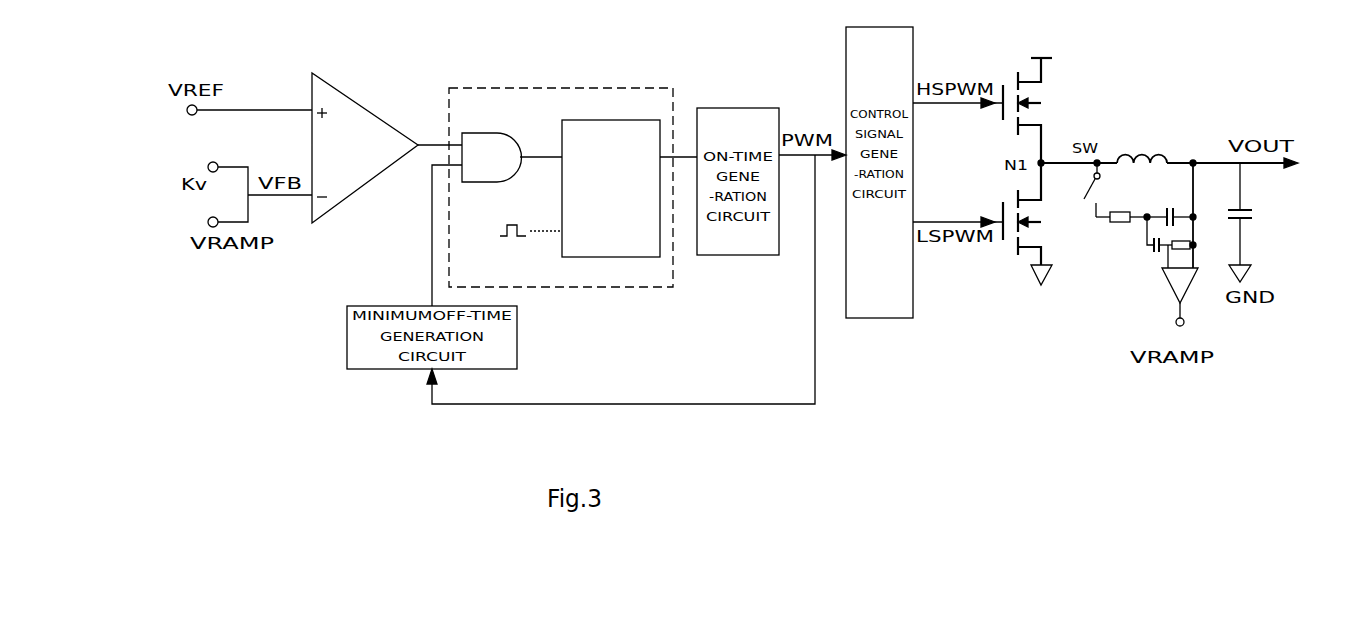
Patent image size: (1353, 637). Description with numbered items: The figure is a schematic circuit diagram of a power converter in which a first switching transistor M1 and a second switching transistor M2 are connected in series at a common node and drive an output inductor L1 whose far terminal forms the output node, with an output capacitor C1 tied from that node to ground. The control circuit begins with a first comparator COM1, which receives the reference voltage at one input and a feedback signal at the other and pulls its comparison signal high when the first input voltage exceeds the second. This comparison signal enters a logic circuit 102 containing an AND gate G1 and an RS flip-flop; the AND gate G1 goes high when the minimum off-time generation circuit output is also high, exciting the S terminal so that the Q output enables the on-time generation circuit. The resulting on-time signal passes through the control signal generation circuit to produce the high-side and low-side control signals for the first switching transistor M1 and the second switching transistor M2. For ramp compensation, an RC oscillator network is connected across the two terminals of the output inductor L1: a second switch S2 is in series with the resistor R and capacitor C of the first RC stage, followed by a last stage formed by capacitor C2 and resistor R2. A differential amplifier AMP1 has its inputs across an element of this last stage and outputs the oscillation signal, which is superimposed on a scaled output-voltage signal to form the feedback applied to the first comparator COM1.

The logic circuit 102 is at (586, 163).
The first comparator COM1 is at (365, 148).
The AND gate G1 is at (492, 157).
The first switching transistor M1 is at (1039, 110).
The second switching transistor M2 is at (1038, 224).
The output inductor L1 is at (1142, 149).
The second switch S2 is at (1081, 191).
The output capacitor C1 is at (1252, 214).
The resistor R is at (1121, 207).
The capacitor C is at (1170, 209).
The capacitor C2 is at (1157, 234).
The resistor R2 is at (1180, 239).
The differential amplifier AMP1 is at (1168, 289).